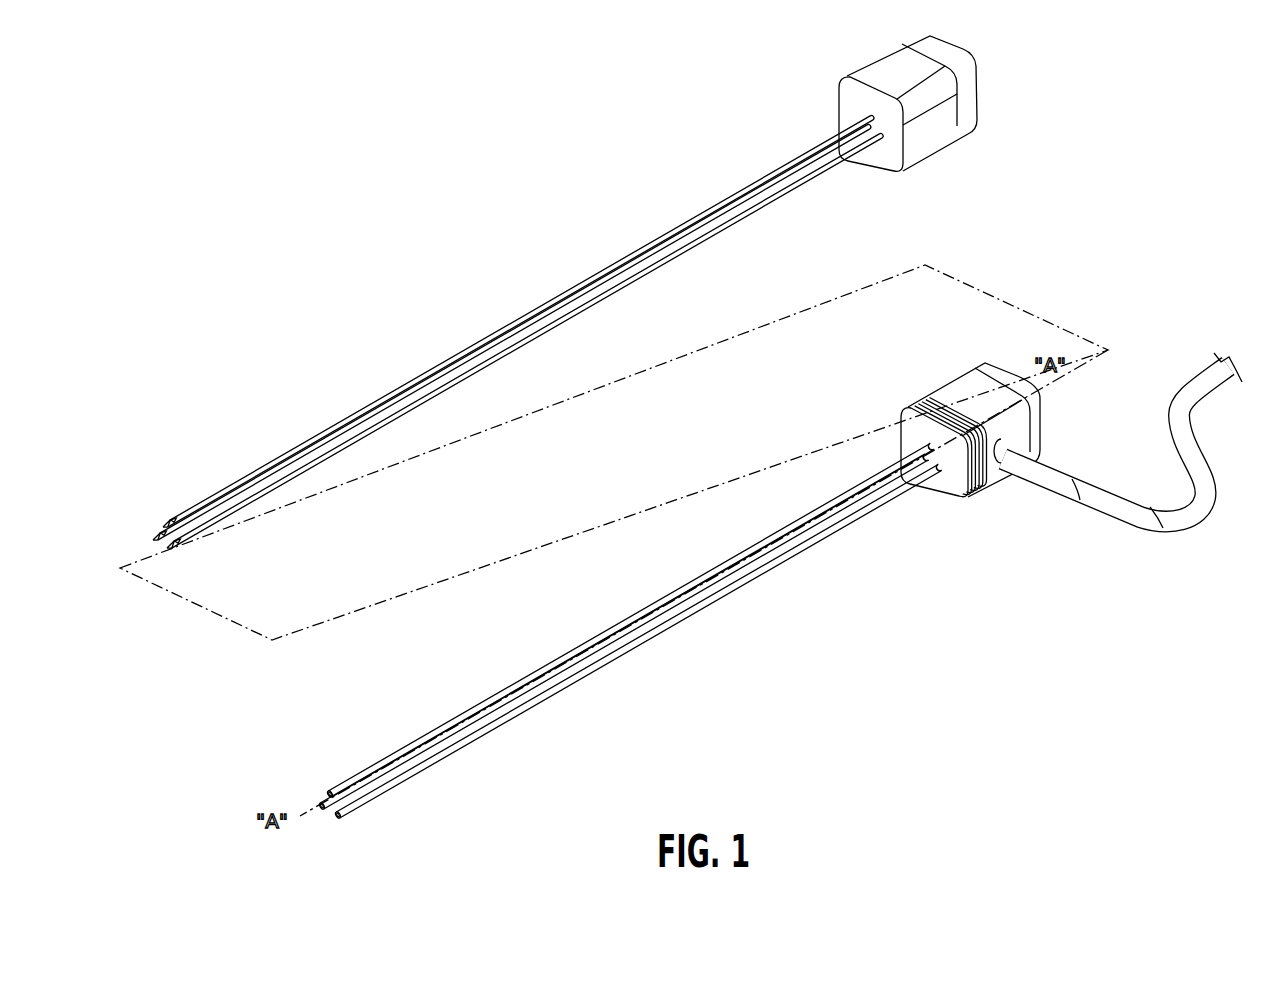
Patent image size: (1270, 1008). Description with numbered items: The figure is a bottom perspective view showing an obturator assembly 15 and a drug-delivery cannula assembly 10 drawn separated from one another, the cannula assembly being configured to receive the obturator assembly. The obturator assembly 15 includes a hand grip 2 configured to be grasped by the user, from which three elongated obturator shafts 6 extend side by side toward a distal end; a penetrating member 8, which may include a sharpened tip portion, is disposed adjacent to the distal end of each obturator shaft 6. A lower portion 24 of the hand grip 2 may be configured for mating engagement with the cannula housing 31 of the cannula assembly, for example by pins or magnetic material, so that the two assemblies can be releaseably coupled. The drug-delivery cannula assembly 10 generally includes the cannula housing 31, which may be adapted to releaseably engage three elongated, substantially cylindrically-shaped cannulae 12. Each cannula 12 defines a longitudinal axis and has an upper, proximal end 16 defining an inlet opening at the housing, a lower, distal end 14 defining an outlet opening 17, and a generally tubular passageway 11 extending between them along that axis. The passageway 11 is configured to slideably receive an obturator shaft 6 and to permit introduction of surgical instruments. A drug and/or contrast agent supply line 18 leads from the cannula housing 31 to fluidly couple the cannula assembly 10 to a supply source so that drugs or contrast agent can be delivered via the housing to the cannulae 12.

The obturator assembly 15 is at (777, 73).
The hand grip 2 is at (938, 158).
The lower portion 24 is at (885, 158).
The obturator shafts 6 is at (540, 308).
The penetrating member 8 is at (163, 526).
The drug-delivery cannula assembly 10 is at (861, 382).
The cannula housing 31 is at (990, 500).
The upper end 16 is at (935, 472).
The drug and/or contrast agent supply line 18 is at (1193, 512).
The cannulae 12 is at (613, 630).
The passageway 11 is at (485, 703).
The lower end 14 is at (333, 791).
The outlet opening 17 is at (338, 817).